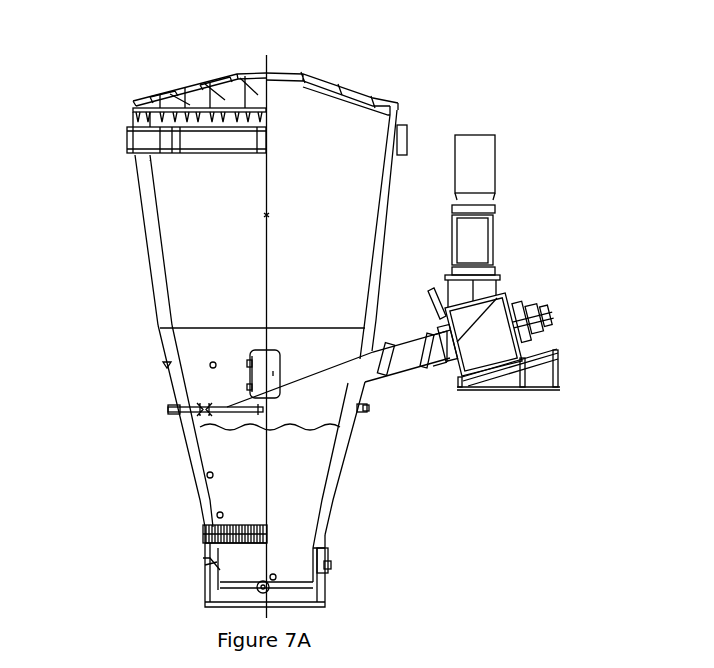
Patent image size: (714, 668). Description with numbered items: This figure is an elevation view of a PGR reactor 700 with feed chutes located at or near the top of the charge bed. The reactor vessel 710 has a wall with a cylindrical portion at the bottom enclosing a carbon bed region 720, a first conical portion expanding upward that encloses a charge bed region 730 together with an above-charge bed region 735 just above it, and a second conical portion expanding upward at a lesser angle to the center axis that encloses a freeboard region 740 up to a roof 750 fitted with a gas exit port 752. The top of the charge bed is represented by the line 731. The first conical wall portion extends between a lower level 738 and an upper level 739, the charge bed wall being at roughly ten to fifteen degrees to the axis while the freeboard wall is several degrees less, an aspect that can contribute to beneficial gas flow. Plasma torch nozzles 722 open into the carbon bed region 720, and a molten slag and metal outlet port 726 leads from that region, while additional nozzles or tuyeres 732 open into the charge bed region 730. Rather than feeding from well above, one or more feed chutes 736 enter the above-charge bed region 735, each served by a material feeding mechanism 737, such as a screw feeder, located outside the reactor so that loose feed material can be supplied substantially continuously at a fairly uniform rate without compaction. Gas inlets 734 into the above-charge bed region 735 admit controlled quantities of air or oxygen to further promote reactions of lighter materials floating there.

The PGR reactor 700 is at (357, 53).
The reactor vessel 710 is at (155, 305).
The carbon bed region 720 is at (300, 565).
The plasma torch nozzles 722 is at (330, 568).
The molten slag and metal outlet port 726 is at (277, 577).
The charge bed region 730 is at (315, 457).
The line representing top of charge bed 731 is at (200, 428).
The nozzles or tuyeres 732 is at (216, 516).
The gas inlets 734 is at (210, 365).
The above-charge bed region 735 is at (315, 408).
The feed chutes 736 is at (365, 383).
The material feeding mechanisms 737 is at (510, 297).
The level 738 is at (205, 524).
The level 739 is at (163, 329).
The freeboard region 740 is at (335, 200).
The roof 750 is at (142, 98).
The gas exit port 752 is at (322, 72).